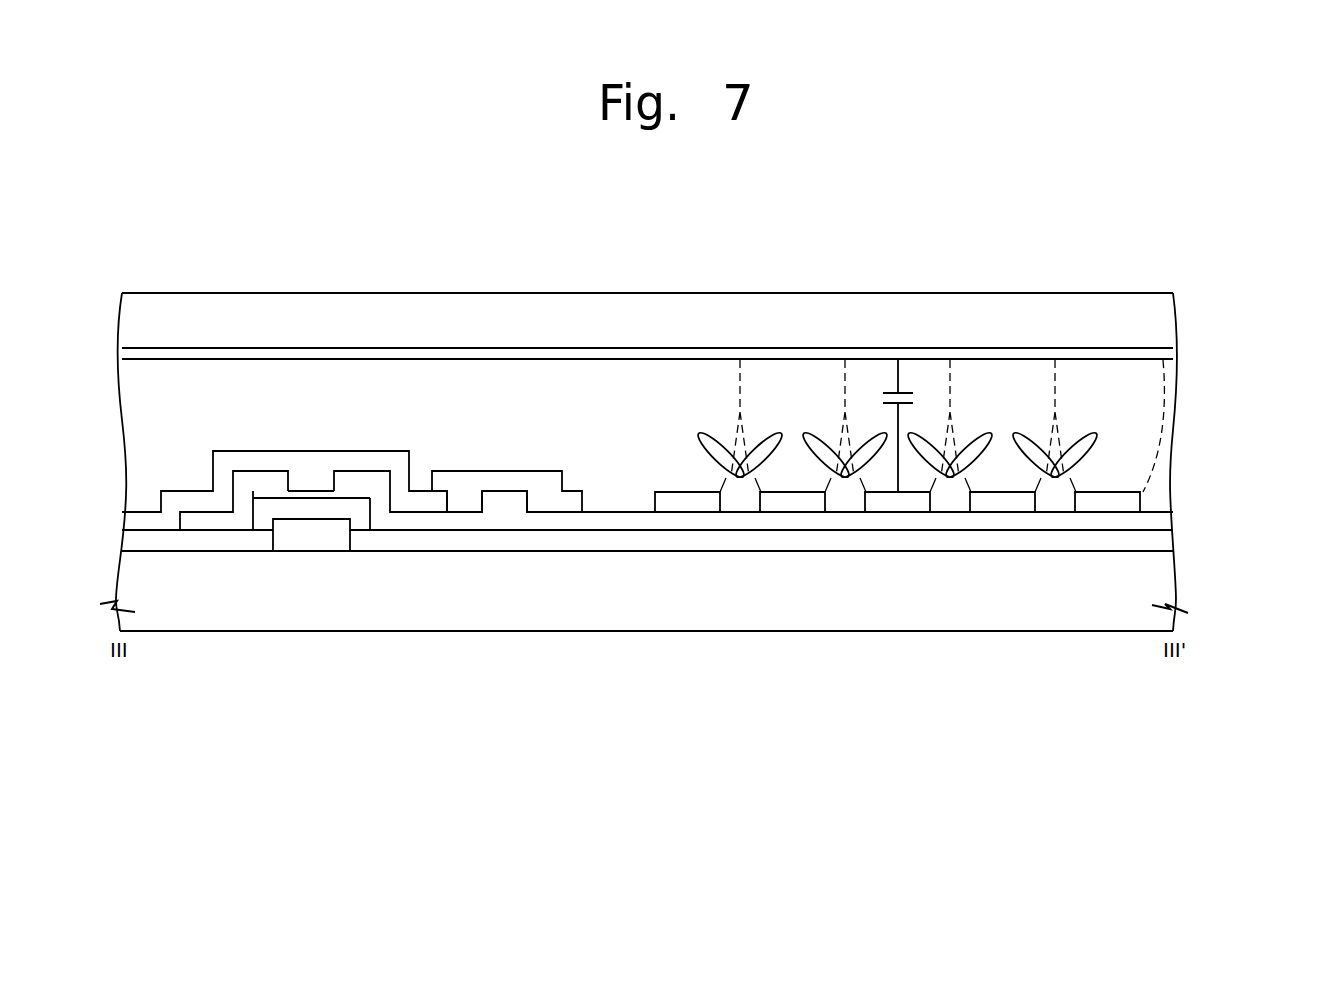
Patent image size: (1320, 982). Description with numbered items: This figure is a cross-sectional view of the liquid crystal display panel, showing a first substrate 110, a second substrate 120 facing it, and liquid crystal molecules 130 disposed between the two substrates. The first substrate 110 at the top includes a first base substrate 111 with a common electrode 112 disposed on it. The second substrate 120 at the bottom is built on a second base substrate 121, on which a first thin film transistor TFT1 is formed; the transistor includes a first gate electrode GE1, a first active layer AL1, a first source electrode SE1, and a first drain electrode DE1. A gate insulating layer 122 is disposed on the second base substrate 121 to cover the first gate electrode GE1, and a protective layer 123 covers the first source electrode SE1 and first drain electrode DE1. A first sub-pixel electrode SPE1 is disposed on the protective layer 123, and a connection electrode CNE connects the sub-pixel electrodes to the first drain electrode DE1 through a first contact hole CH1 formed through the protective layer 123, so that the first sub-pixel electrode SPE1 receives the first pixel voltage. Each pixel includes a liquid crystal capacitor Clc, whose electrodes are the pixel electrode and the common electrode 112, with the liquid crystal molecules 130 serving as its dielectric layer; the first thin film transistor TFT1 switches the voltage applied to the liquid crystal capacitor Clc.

The first substrate 110 is at (715, 331).
The first base substrate 111 is at (1160, 313).
The common electrode 112 is at (1160, 355).
The liquid crystal molecules 130 is at (1095, 445).
The second substrate 120 is at (714, 541).
The second base substrate 121 is at (684, 591).
The gate insulating layer 122 is at (1160, 540).
The protective layer 123 is at (1160, 520).
The liquid crystal capacitor Clc is at (885, 426).
The first sub-pixel electrode SPE1 is at (793, 502).
The connection electrode CNE is at (549, 493).
The first contact hole CH1 is at (448, 502).
The first thin film transistor TFT1 is at (353, 601).
The first source electrode SE1 is at (222, 522).
The first gate electrode GE1 is at (286, 548).
The first active layer AL1 is at (337, 497).
The first drain electrode DE1 is at (430, 578).